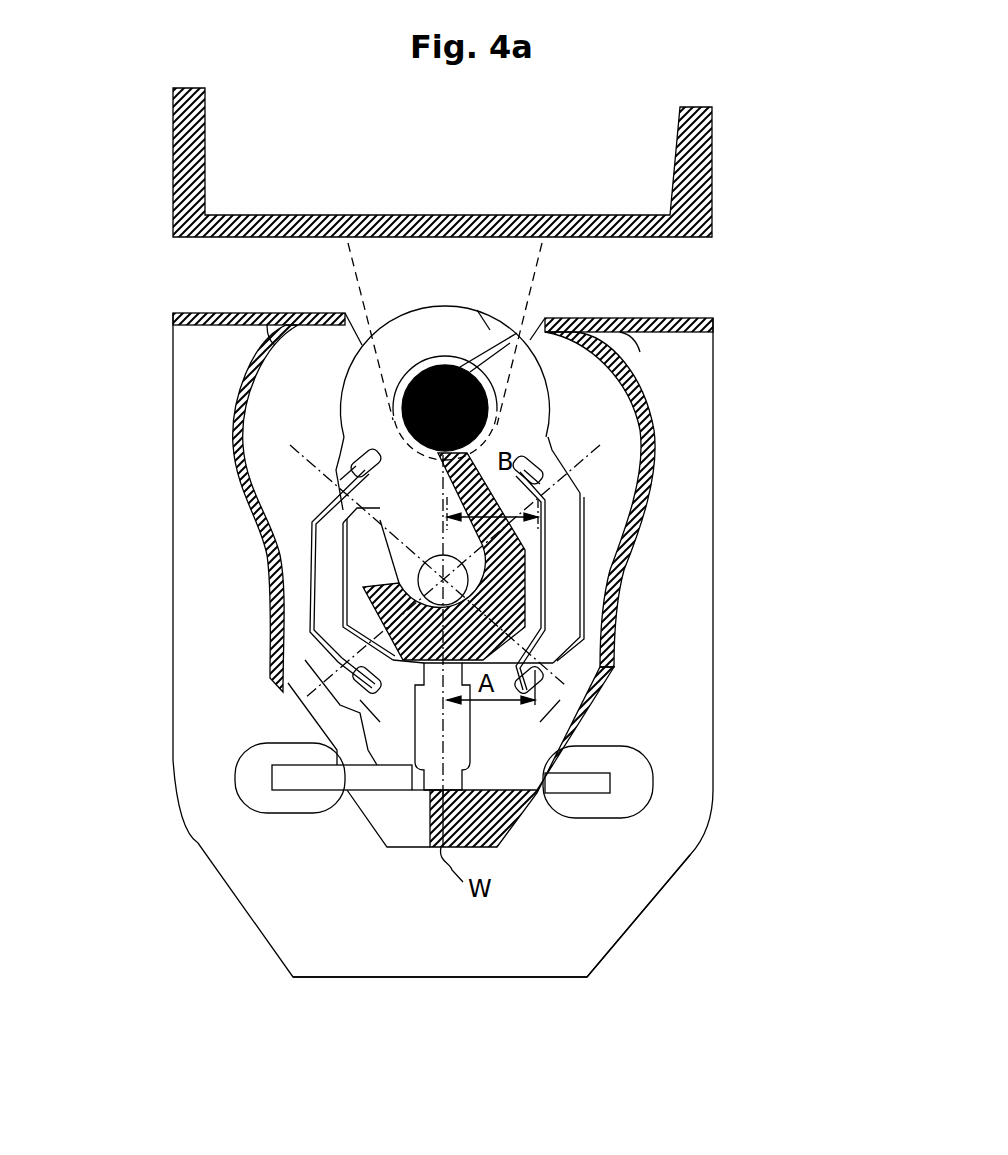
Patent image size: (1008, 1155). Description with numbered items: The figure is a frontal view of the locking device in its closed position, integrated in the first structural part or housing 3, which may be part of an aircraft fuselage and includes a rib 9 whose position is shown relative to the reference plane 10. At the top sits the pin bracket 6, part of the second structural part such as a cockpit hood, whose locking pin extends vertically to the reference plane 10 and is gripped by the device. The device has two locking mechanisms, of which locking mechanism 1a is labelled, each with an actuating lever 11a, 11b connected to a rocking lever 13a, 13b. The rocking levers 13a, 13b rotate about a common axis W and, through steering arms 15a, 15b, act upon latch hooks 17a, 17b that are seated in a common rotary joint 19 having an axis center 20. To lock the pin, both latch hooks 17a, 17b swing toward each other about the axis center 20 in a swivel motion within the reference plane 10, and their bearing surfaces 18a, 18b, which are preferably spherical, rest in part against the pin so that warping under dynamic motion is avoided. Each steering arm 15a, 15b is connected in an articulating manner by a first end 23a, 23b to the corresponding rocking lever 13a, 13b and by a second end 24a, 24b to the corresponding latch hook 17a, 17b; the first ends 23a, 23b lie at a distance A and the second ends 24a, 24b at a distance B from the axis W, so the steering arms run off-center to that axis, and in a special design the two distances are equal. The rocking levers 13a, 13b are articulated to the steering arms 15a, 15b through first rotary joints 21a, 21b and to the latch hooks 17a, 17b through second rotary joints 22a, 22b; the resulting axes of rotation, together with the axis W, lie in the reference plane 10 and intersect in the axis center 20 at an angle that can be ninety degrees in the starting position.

The pin bracket 6 is at (383, 270).
The locking mechanism 1a is at (519, 401).
The first structural part 3 is at (673, 602).
The latch hook 17b is at (367, 433).
The latch hook 17a is at (530, 432).
The bearing surface 18b is at (405, 378).
The bearing surface 18a is at (482, 383).
The common rotary joint 19 is at (390, 563).
The axis center 20 is at (443, 580).
The steering arm 15b is at (313, 607).
The steering arm 15a is at (567, 612).
The second rotary joint 22b is at (315, 478).
The second rotary joint 22a is at (550, 490).
The second end 24b is at (350, 472).
The second end 24a is at (540, 477).
The first rotary joint 21b is at (345, 681).
The first rotary joint 21a is at (560, 688).
The first end 23b is at (360, 712).
The first end 23a is at (565, 707).
The rocking lever 13b is at (360, 714).
The rocking lever 13a is at (563, 684).
The actuating lever 11b is at (297, 780).
The actuating lever 11a is at (598, 782).
The reference plane 10 is at (440, 942).
The rib 9 is at (628, 920).